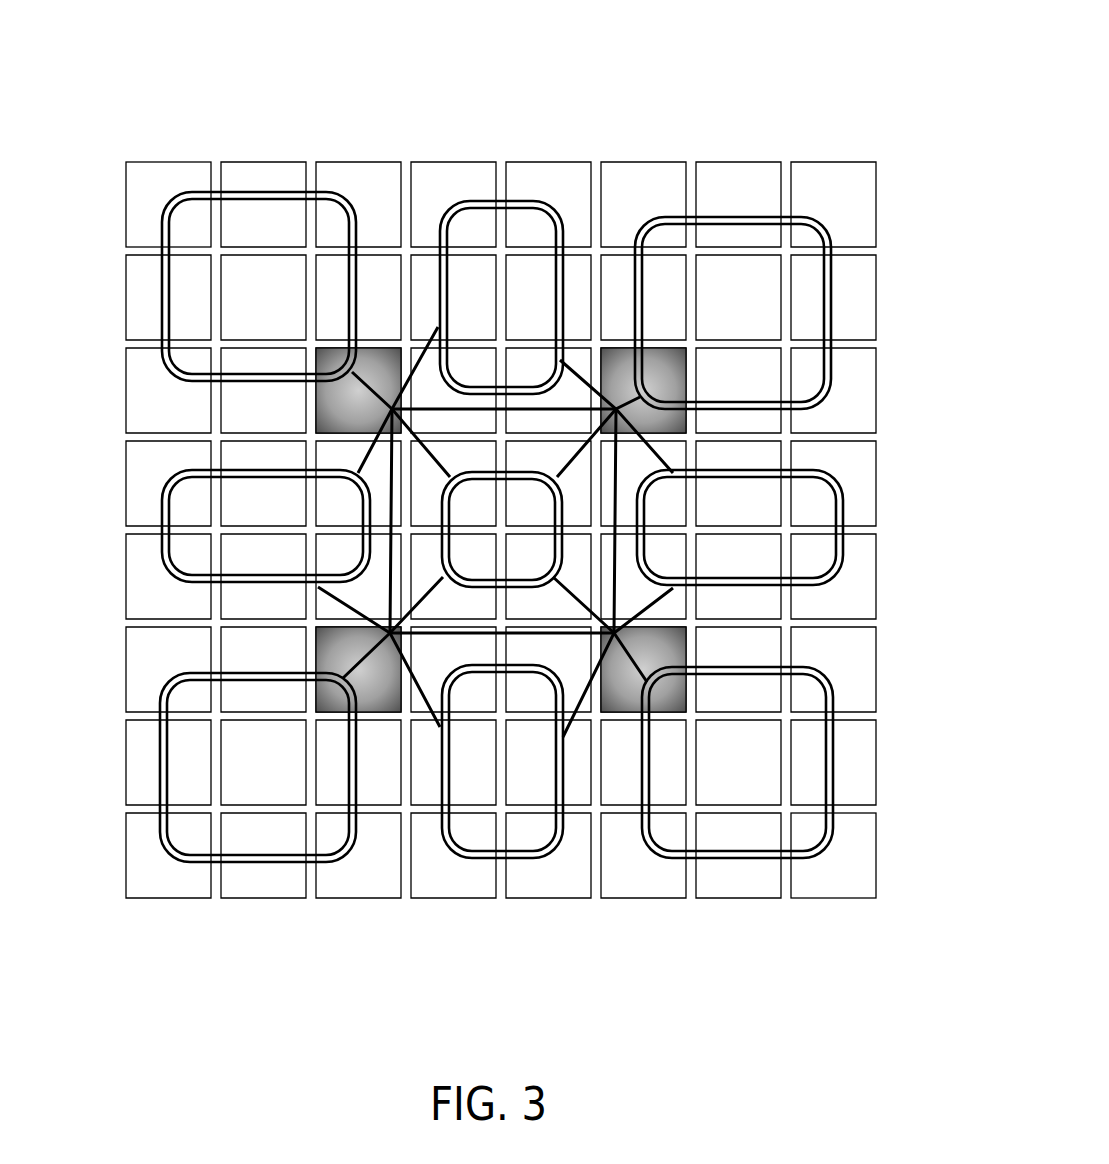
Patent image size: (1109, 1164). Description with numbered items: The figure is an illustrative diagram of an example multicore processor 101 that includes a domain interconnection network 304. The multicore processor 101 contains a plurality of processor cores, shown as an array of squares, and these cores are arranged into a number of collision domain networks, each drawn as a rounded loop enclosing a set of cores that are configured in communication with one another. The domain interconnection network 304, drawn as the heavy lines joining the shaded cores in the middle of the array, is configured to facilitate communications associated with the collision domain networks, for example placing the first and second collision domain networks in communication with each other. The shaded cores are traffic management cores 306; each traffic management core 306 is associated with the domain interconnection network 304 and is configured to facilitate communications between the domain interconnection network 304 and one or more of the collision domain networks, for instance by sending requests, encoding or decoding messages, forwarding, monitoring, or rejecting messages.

The multicore processor 101 is at (752, 107).
The domain interconnection network 304 is at (358, 665).
The traffic management core 306 is at (327, 408).